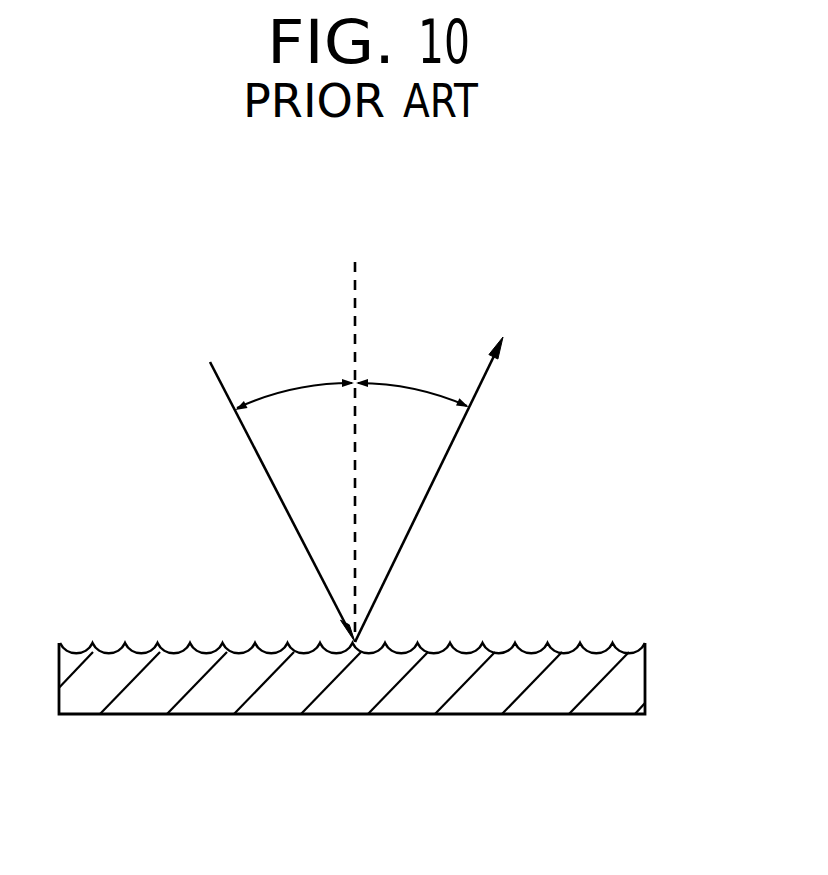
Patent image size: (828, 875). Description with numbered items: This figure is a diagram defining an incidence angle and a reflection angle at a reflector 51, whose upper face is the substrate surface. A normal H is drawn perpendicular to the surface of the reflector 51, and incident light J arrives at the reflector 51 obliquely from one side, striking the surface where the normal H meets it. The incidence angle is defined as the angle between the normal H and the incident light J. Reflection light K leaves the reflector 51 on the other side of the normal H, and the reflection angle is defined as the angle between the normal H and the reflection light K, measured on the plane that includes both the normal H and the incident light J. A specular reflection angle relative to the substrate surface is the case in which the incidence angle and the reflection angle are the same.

The reflector 51 is at (645, 679).
The normal H is at (356, 434).
The incident light J is at (273, 479).
The reflection light K is at (438, 468).